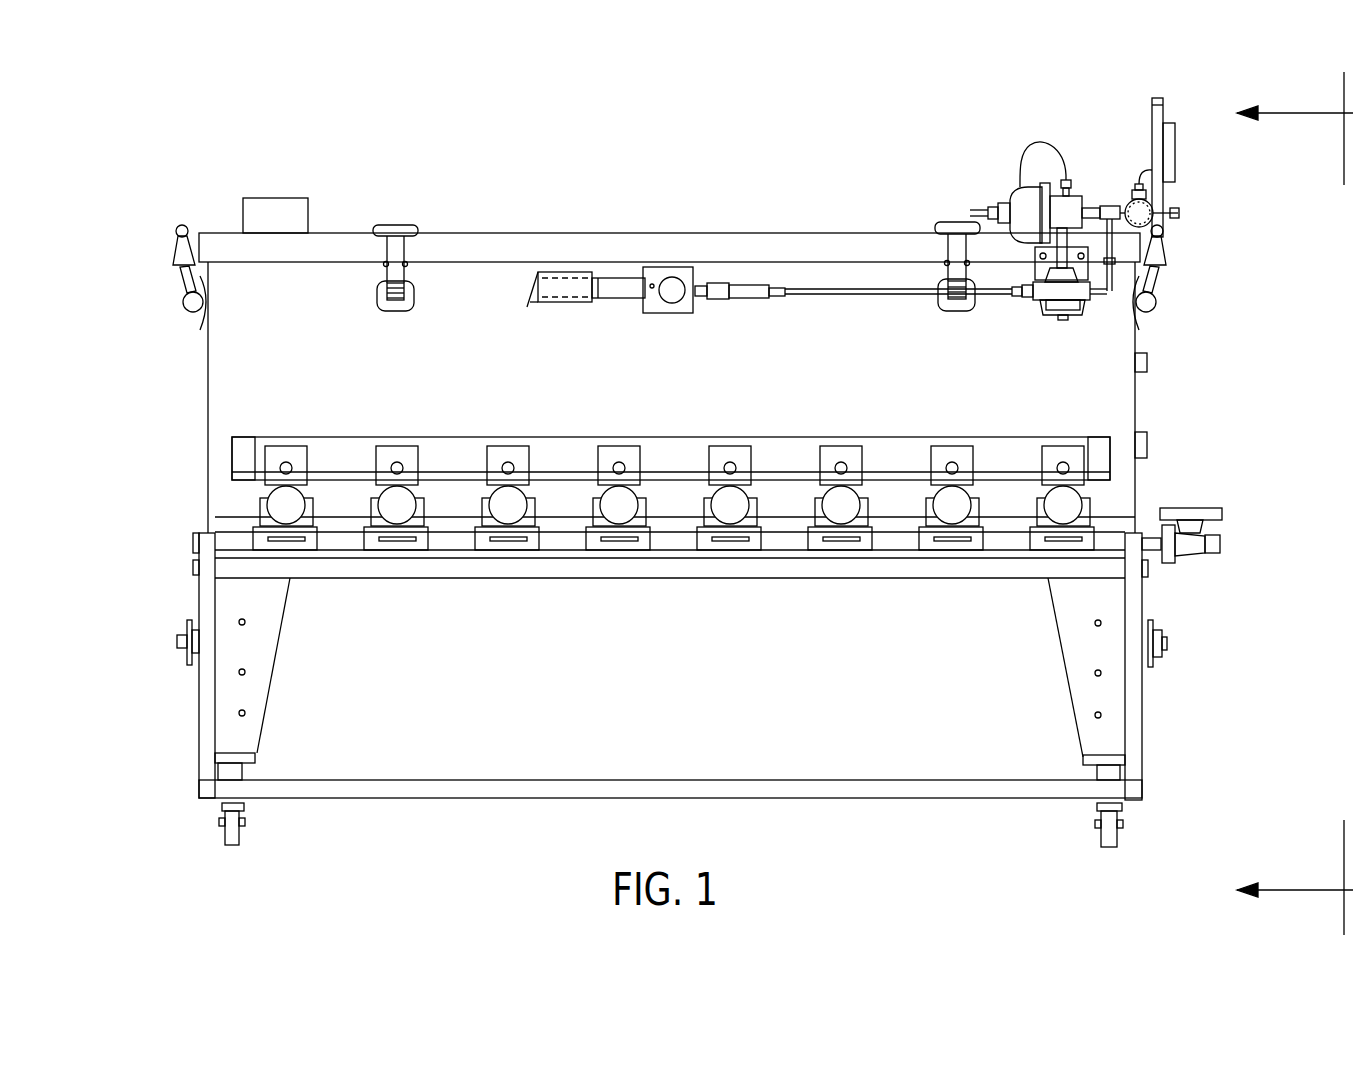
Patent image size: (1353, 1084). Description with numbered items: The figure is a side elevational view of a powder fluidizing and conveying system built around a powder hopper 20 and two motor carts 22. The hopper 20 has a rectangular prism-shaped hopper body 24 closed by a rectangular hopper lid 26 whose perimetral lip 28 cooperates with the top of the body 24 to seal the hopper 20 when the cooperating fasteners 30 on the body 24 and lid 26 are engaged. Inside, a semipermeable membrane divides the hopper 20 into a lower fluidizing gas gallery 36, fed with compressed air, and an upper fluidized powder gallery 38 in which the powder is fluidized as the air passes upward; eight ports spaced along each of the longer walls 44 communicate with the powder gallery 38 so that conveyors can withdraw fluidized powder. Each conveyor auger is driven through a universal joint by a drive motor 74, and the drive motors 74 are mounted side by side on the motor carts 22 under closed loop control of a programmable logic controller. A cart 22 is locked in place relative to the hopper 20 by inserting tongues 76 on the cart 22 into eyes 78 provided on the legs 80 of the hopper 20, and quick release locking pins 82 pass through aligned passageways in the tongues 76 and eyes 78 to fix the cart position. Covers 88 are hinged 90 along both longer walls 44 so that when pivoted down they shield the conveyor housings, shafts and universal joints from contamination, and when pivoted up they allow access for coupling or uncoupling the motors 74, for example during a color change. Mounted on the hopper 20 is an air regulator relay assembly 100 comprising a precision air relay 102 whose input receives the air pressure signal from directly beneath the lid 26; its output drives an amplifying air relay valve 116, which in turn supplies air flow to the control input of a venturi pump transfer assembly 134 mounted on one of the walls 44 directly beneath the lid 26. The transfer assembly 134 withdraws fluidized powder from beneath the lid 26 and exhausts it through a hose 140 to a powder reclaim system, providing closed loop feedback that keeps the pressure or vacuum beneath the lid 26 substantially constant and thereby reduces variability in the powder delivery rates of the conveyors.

The powder hopper 20 is at (110, 362).
The motor cart 22 is at (633, 677).
The hopper body 24 is at (1112, 366).
The hopper lid 26 is at (664, 215).
The perimetral lip 28 is at (330, 240).
The fasteners 30 is at (398, 226).
The fluidizing gas gallery 36 is at (468, 568).
The fluidized powder gallery 38 is at (230, 394).
The longer walls 44 is at (679, 397).
The drive motor 74 is at (395, 500).
The tongues 76 is at (188, 652).
The eyes 78 is at (188, 640).
The legs 80 is at (272, 654).
The quick release locking pins 82 is at (190, 622).
The covers 88 is at (232, 455).
The hinges 90 is at (432, 437).
The air regulator relay assembly 100 is at (1069, 215).
The precision air relay 102 is at (1012, 192).
The amplifying air relay valve 116 is at (1066, 322).
The venturi pump transfer assembly 134 is at (665, 313).
The hose 140 is at (558, 280).